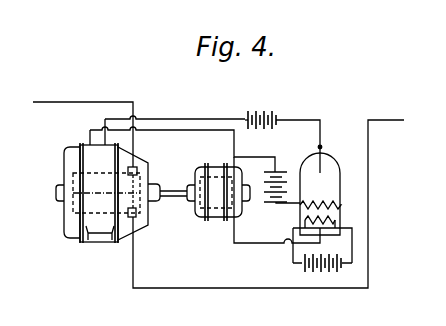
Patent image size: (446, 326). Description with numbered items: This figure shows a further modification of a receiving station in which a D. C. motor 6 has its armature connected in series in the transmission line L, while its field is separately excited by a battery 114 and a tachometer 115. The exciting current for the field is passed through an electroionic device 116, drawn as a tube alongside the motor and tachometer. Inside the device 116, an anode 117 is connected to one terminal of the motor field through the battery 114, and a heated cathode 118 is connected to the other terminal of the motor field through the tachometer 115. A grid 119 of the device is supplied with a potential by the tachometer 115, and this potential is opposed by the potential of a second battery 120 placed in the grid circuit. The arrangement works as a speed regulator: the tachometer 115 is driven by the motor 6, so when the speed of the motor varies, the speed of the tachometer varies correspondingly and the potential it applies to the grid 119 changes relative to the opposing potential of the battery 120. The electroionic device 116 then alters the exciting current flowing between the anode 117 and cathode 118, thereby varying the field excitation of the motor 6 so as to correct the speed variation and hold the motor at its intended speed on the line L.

The line conductors L is at (87, 89).
The D. C. motor M6 6 is at (66, 152).
The battery 114 is at (247, 107).
The tachometer 115 is at (212, 216).
The electroionic device 116 is at (316, 158).
The anode 117 is at (330, 154).
The heated cathode 118 is at (305, 220).
The grid 119 is at (329, 185).
The battery 120 is at (264, 188).